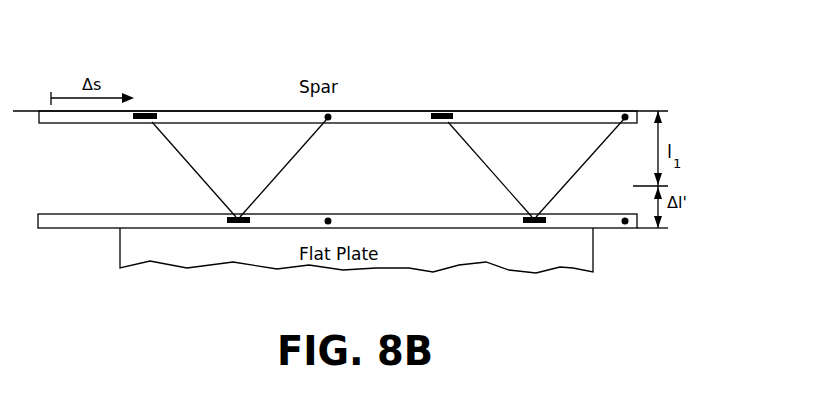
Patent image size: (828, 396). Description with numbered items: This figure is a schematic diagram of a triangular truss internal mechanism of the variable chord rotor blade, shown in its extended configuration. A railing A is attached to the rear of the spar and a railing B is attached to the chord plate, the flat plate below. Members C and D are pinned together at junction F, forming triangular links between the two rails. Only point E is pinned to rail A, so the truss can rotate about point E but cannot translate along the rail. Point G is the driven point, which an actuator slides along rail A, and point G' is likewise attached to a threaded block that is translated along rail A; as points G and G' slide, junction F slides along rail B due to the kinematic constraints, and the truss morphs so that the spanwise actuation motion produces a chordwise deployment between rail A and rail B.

The railing A is at (340, 122).
The railing B is at (343, 243).
The member C is at (342, 169).
The member D is at (432, 168).
The point E is at (477, 169).
The junction F is at (386, 204).
The point G is at (142, 130).
The point G' is at (439, 131).